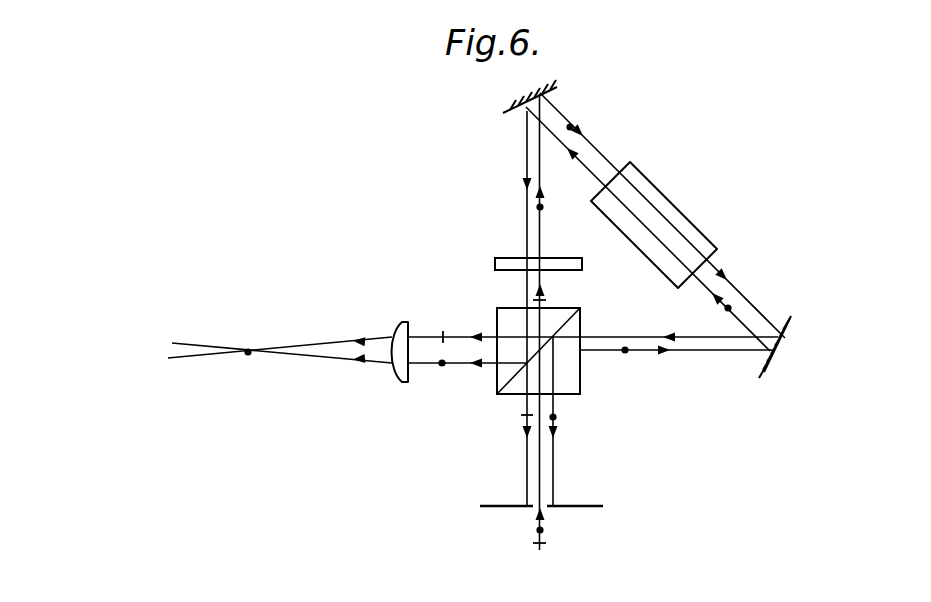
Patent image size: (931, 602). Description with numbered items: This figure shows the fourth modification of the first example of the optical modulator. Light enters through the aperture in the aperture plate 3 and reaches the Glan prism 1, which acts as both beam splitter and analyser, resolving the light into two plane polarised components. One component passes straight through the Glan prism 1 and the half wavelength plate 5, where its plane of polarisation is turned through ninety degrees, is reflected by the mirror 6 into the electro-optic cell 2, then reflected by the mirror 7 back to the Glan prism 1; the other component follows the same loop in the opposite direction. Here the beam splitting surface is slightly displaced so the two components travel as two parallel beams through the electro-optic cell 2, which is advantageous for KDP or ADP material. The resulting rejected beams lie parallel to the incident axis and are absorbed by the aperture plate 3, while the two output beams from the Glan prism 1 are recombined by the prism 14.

The Glan prism 1 is at (499, 320).
The electro-optic cell 2 is at (648, 194).
The aperture plate 3 is at (492, 505).
The half wavelength plate 5 is at (505, 262).
The mirror 6 is at (511, 106).
The mirror 7 is at (782, 343).
The prism 14 is at (400, 381).